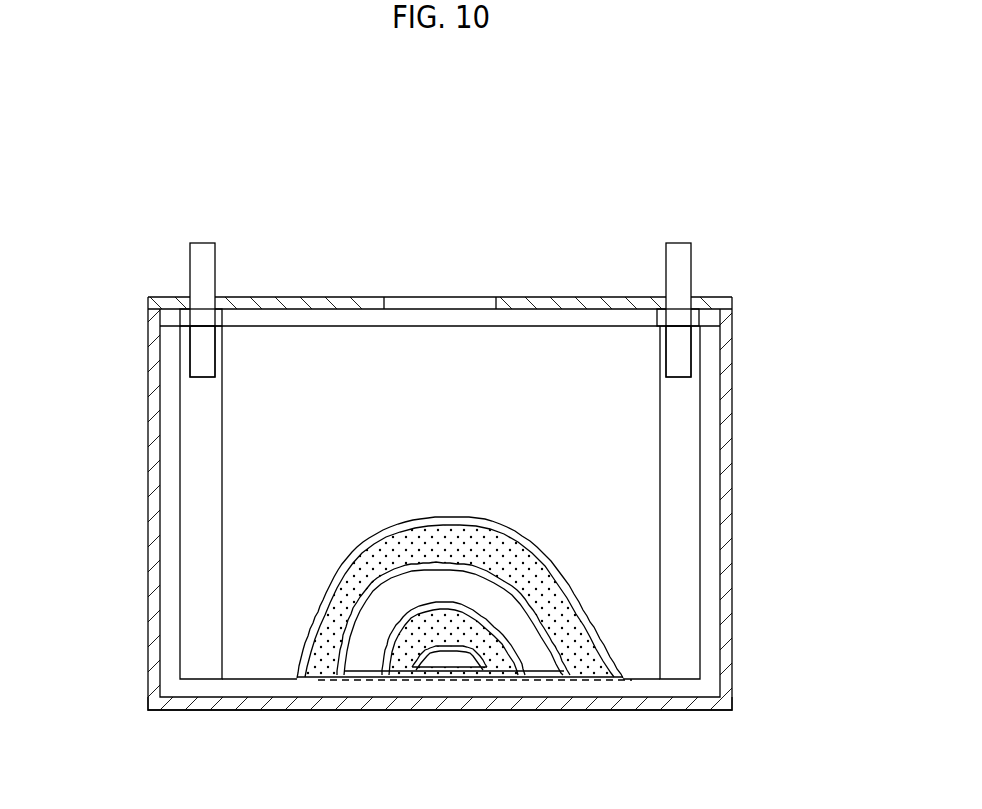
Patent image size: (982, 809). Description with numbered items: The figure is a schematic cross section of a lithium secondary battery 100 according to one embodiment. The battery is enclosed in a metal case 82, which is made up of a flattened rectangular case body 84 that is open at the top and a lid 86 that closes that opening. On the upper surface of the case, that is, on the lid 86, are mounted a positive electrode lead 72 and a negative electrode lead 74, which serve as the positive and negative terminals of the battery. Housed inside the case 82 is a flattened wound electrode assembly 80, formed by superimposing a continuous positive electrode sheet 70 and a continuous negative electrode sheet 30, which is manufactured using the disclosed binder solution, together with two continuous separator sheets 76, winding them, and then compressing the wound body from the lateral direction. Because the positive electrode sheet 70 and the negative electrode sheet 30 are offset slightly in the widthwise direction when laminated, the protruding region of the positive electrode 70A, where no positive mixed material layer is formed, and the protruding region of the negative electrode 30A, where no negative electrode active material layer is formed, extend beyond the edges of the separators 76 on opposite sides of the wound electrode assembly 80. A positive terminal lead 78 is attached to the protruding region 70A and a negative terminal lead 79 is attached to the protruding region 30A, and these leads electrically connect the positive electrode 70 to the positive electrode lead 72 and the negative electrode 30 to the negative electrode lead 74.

The lithium secondary battery 100 is at (602, 126).
The negative electrode sheet 30 is at (272, 662).
The protruding region of the negative electrode 30A is at (198, 535).
The positive electrode sheet 70 is at (368, 662).
The protruding region of the positive electrode 70A is at (682, 558).
The positive electrode lead 72 is at (679, 258).
The negative electrode lead 74 is at (205, 258).
The separator sheets 76 is at (322, 658).
The positive terminal lead 78 is at (677, 362).
The negative terminal lead 79 is at (208, 362).
The wound electrode assembly 80 is at (632, 690).
The case 82 is at (743, 457).
The case body 84 is at (726, 585).
The lid 86 is at (320, 305).